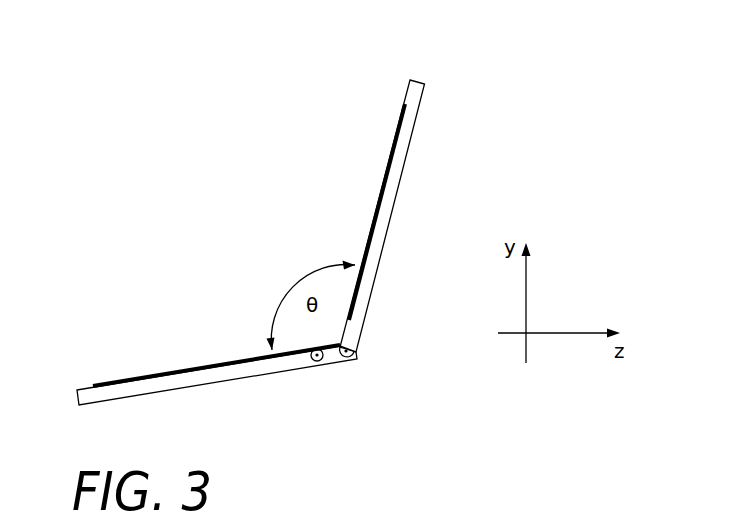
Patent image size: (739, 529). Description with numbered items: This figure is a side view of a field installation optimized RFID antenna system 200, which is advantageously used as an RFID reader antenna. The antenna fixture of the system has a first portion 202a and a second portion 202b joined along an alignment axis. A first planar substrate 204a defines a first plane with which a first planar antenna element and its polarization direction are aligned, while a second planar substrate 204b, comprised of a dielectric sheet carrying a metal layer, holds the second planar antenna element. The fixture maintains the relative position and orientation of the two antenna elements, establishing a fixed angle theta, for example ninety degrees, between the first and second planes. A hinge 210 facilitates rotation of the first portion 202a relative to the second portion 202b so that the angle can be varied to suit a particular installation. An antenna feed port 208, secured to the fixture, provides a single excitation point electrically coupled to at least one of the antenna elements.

The RFID antenna system 200 is at (472, 156).
The first portion 202a is at (417, 79).
The second portion 202b is at (262, 369).
The first planar substrate 204a is at (374, 183).
The second planar substrate 204b is at (110, 382).
The antenna feed port 208 is at (313, 385).
The hinge 210 is at (367, 339).